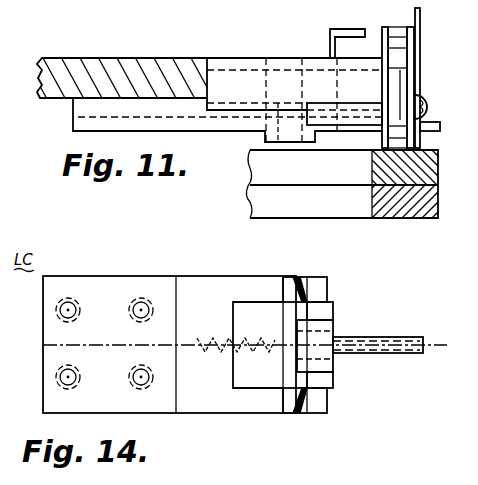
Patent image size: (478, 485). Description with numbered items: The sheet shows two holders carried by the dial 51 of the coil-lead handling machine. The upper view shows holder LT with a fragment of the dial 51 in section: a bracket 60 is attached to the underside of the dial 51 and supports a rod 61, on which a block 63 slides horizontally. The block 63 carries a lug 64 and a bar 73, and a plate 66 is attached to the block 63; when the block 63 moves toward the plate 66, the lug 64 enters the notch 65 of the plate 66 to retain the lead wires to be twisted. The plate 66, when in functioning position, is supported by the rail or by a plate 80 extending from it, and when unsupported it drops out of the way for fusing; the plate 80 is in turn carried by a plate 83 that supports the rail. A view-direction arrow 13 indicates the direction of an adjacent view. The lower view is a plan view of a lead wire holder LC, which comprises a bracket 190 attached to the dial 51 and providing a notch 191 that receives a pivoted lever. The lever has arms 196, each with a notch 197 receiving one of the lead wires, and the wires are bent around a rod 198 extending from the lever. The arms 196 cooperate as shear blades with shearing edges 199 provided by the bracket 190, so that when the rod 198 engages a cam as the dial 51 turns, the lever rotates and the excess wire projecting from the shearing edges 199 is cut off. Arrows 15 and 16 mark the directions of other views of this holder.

In FIG. 11, the dial 51 is at (139, 70).
In FIG. 11, the bracket 60 is at (80, 117).
In FIG. 11, the rod 61 is at (233, 68).
In FIG. 11, the block 63 is at (268, 58).
In FIG. 11, the lug 64 is at (356, 29).
In FIG. 11, the plate 66 is at (413, 50).
In FIG. 11, the view direction arrow 13 is at (428, 73).
In FIG. 11, the bar 73 is at (357, 103).
In FIG. 11, the plate 80 is at (439, 163).
In FIG. 11, the plate 83 is at (250, 209).
In FIG. 14, the bracket 190 is at (215, 271).
In FIG. 14, the notch 191 is at (272, 318).
In FIG. 14, the arms 196 is at (335, 312).
In FIG. 14, the notch 197 is at (323, 290).
In FIG. 14, the rod 198 is at (414, 337).
In FIG. 14, the shearing edges 199 is at (312, 305).
In FIG. 14, the section line 16 is at (27, 355).
In FIG. 14, the section line 15 is at (233, 425).
In FIG. 14, the notch 65 is at (459, 403).